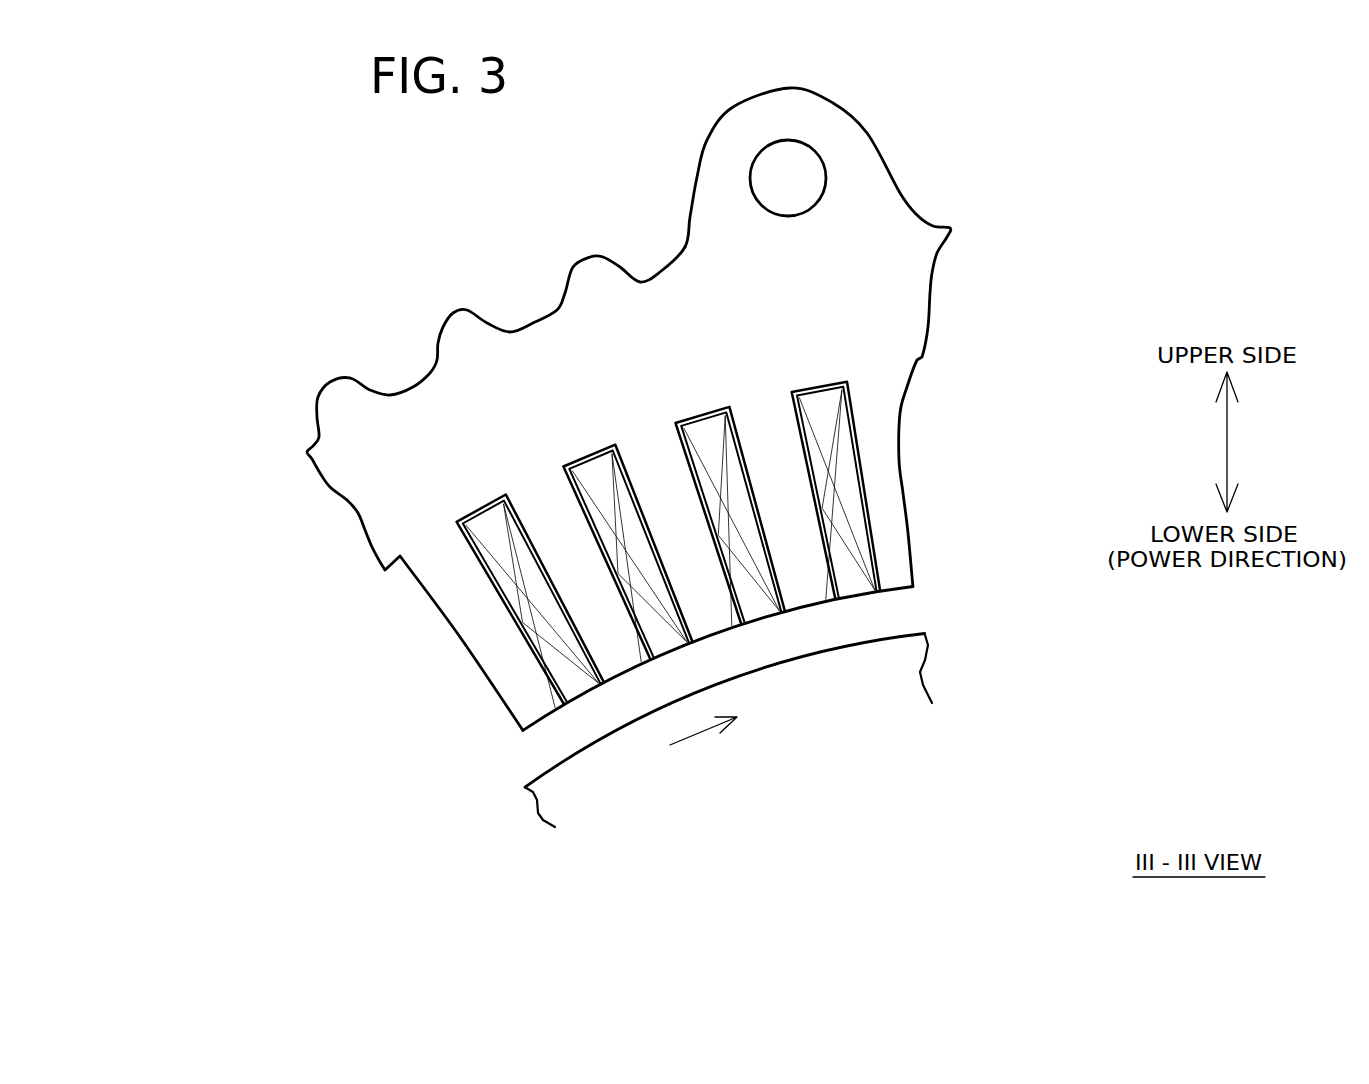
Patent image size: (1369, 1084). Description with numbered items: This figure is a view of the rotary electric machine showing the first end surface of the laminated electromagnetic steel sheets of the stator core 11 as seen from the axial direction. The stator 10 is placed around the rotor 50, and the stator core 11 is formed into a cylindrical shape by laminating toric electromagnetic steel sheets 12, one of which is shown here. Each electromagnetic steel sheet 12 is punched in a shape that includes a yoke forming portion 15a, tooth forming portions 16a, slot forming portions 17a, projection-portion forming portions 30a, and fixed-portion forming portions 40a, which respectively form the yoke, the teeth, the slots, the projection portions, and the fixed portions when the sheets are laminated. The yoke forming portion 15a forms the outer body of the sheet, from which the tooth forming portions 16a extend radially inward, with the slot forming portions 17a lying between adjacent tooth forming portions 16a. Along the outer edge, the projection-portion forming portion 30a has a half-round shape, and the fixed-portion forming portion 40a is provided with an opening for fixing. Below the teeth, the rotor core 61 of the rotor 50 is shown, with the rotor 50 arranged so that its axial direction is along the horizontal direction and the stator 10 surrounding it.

The stator 10 is at (581, 502).
The stator core 11 is at (342, 498).
The electromagnetic steel sheet 12 is at (933, 290).
The yoke forming portion 15a is at (333, 457).
The tooth forming portion 16a is at (620, 653).
The slot forming portion 17a is at (550, 667).
The projection-portion forming portion 30a is at (602, 257).
The fixed-portion forming portion 40a is at (867, 132).
The rotor 50 is at (841, 731).
The rotor core 61 is at (923, 668).